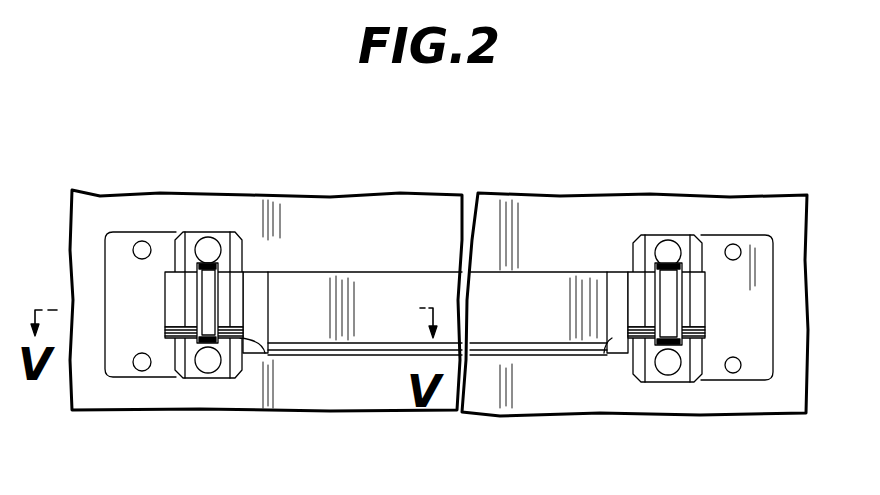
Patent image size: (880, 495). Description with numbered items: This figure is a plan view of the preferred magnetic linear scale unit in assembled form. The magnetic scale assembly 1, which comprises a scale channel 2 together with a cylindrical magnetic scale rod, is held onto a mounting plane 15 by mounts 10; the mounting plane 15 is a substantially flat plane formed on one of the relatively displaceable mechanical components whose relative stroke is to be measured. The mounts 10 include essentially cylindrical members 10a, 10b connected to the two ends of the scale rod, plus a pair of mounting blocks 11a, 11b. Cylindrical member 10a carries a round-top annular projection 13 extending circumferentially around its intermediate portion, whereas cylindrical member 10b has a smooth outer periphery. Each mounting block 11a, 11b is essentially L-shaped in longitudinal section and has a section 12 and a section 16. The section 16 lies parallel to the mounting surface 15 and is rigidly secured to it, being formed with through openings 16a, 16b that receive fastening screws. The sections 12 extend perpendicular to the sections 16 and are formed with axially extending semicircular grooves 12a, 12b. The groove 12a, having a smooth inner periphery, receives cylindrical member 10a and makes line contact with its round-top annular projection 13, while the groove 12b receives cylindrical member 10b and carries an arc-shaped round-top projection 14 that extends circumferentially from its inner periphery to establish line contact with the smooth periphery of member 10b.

The magnetic scale assembly 1 is at (540, 245).
The scale channel 2 is at (365, 285).
The mounts 10 is at (455, 294).
The cylindrical member 10a is at (172, 338).
The cylindrical member 10b is at (705, 308).
The mounting block 11a is at (118, 252).
The mounting block 11b is at (763, 262).
The section 12 is at (435, 313).
The semicircular groove 12a is at (253, 357).
The semicircular groove 12b is at (641, 367).
The annular projection 13 is at (213, 277).
The arc-shaped projection 14 is at (665, 267).
The mounting plane 15 is at (612, 210).
The section 16 is at (439, 302).
The through opening 16a is at (145, 243).
The through opening 16b is at (725, 248).